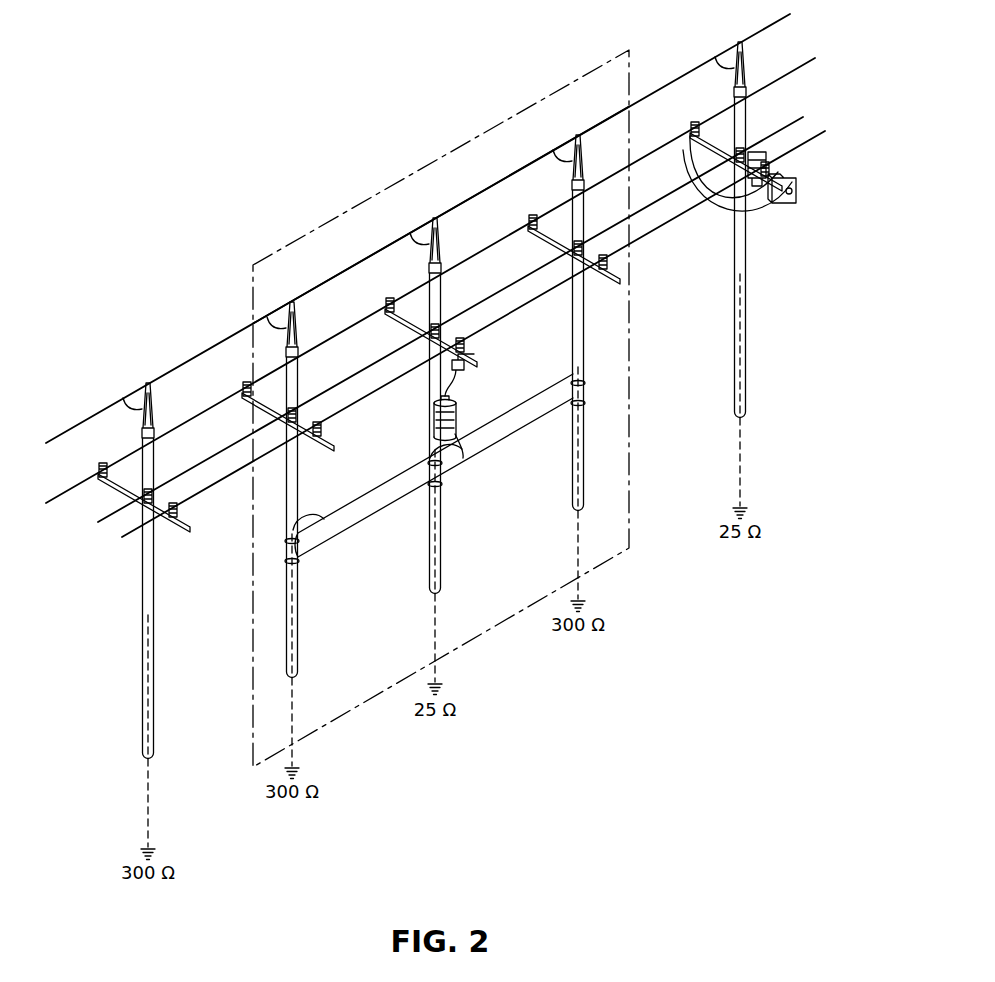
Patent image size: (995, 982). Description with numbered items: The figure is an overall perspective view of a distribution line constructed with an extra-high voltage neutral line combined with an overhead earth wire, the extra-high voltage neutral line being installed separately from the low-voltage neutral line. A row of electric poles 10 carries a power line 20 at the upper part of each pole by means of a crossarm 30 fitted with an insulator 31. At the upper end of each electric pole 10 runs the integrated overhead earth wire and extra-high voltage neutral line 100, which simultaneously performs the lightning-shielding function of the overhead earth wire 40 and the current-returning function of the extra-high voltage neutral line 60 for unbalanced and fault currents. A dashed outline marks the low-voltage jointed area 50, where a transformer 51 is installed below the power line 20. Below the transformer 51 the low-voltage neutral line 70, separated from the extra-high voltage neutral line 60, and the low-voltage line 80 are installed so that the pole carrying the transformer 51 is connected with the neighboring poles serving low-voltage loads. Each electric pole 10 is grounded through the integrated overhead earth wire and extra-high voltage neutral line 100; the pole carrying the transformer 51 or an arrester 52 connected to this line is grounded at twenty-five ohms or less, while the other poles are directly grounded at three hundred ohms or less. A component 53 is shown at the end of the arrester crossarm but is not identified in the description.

The electric pole 10 is at (298, 650).
The power line 20 is at (470, 198).
The crossarm 30 is at (621, 290).
The insulator 31 is at (607, 256).
The overhead earth wire 40 is at (441, 215).
The low-voltage jointed area 50 is at (550, 96).
The transformer 51 is at (462, 435).
The arrester 52 is at (754, 148).
The connection box 53 is at (788, 202).
The extra-high voltage neutral line 60 is at (368, 253).
The low-voltage neutral line 70 is at (377, 497).
The low-voltage line 80 is at (303, 535).
The integrated overhead earth wire and extra-high voltage neutral line 100 is at (441, 215).